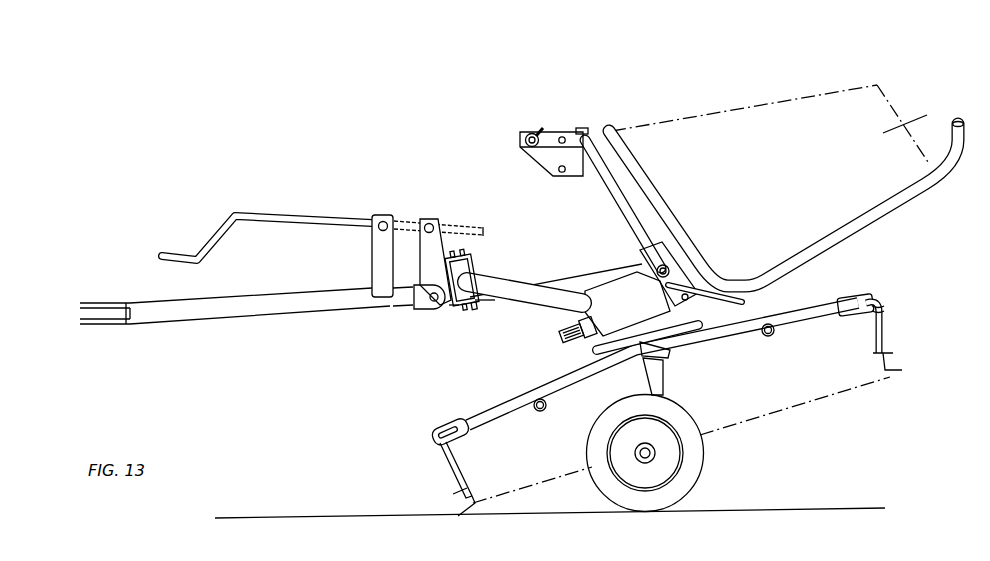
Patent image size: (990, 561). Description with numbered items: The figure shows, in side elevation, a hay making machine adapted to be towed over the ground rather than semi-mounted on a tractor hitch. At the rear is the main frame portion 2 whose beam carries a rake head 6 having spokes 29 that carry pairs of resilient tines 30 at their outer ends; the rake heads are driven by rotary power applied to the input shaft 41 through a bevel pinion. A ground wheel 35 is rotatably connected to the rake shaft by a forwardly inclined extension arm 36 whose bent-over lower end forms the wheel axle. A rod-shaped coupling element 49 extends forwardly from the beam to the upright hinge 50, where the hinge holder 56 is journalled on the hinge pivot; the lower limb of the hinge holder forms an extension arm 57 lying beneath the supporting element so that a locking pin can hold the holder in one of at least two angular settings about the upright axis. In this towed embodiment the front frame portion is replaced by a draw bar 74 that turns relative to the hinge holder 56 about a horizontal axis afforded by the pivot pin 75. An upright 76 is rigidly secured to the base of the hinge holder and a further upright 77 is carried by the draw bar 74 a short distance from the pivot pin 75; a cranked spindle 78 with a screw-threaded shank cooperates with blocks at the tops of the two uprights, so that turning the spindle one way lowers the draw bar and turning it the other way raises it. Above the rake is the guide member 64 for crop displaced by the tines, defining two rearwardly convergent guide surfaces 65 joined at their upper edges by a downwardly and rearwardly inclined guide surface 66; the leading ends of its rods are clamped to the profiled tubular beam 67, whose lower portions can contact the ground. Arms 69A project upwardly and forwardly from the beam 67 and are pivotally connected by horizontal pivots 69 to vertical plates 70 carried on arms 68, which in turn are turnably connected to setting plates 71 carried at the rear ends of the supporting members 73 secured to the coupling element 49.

The main frame portion 2 is at (558, 306).
The rake head 6 is at (753, 336).
The spoke 29 is at (805, 308).
The resilient tine 30 is at (886, 349).
The ground wheel 35 is at (592, 433).
The extension arm 36 is at (665, 388).
The input shaft 41 is at (568, 331).
The coupling element 49 is at (498, 285).
The upright hinge 50 is at (456, 310).
The hinge holder 56 is at (455, 308).
The extension arm 57 is at (491, 302).
The guide member 64 is at (780, 250).
The guide surface 65 is at (927, 115).
The guide surface 66 is at (678, 117).
The profiled tubular beam 67 is at (663, 229).
The arm 68 is at (603, 200).
The pivot 69 is at (548, 128).
The arm 69A is at (584, 130).
The vertical plate 70 is at (550, 162).
The setting plate 71 is at (718, 298).
The supporting member 73 is at (553, 276).
The draw bar 74 is at (148, 292).
The pivot pin 75 is at (425, 306).
The upright 76 is at (433, 221).
The upright 77 is at (373, 251).
The cranked spindle 78 is at (402, 222).